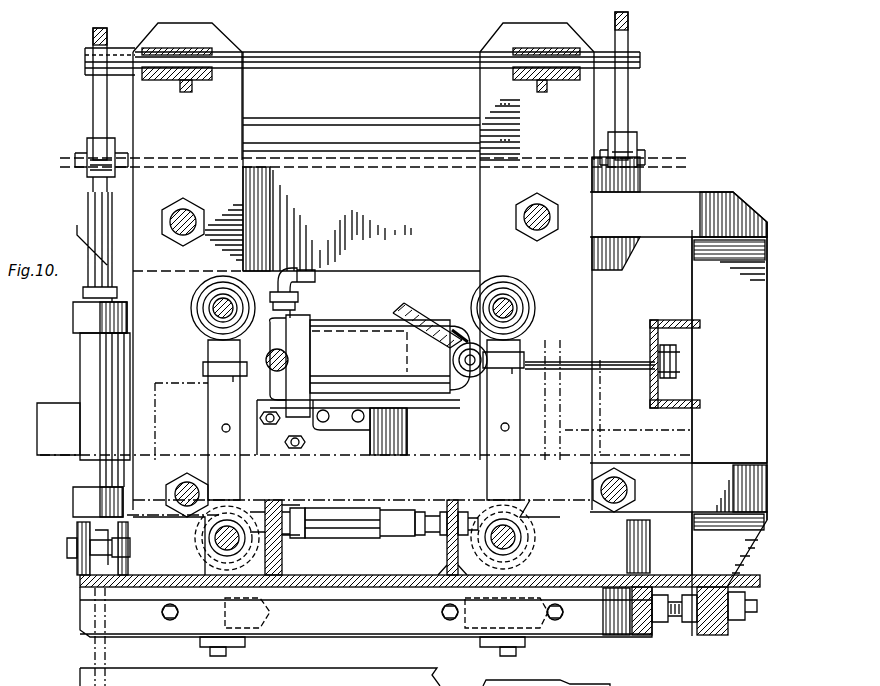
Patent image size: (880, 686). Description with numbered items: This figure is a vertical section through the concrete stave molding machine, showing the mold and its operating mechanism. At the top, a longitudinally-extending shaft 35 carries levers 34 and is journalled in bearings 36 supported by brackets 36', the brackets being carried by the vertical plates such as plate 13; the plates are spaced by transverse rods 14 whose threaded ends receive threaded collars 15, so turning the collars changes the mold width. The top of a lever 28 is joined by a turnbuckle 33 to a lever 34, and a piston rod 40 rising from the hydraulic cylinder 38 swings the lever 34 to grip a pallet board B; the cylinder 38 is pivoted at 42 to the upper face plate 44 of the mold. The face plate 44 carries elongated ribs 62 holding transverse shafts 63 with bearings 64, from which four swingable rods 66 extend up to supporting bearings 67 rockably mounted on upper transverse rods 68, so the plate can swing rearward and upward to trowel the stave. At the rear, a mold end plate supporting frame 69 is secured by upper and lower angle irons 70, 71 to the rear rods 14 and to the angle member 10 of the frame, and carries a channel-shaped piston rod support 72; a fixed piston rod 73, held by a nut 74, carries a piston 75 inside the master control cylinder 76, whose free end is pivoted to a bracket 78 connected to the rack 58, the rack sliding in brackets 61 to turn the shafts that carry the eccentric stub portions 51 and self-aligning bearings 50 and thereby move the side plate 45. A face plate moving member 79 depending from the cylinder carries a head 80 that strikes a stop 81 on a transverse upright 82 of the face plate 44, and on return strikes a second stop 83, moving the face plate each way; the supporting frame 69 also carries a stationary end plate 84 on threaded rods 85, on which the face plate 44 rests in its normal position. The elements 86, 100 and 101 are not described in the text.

The angle member 10 is at (636, 190).
The plate 13 is at (238, 42).
The transverse rod 14 is at (180, 230).
The threaded collar 15 is at (175, 202).
The lever 28 is at (96, 662).
The turnbuckle 33 is at (87, 140).
The lever 34 is at (93, 112).
The longitudinally-extending shaft 35 is at (336, 50).
The bearing 36 is at (361, 40).
The bracket 36' is at (363, 94).
The hydraulic cylinder 38 is at (86, 370).
The piston rod 40 is at (96, 218).
The pivot 42 is at (67, 552).
The upper face plate 44 is at (552, 574).
The side plate 45 is at (83, 630).
The self-aligning bearing 50 is at (200, 642).
The eccentric stub portion 51 is at (226, 652).
The rack 58 is at (40, 414).
The bracket 61 is at (155, 385).
The elongated rib 62 is at (145, 524).
The transversely extending shaft 63 is at (215, 536).
The bearing 64 is at (198, 552).
The swingable and adjustable rod 66 is at (208, 390).
The supporting bearing 67 is at (200, 296).
The upper transverse rod 68 is at (213, 306).
The mold end plate supporting frame 69 is at (698, 298).
The upper angle iron 70 is at (682, 204).
The lower angle iron 71 is at (750, 460).
The channel-shaped piston rod support 72 is at (650, 330).
The fixed piston rod 73 is at (630, 372).
The nut 74 is at (676, 358).
The piston 75 is at (403, 338).
The master control cylinder 76 is at (336, 326).
The bracket 78 is at (290, 452).
The face plate moving member 79 is at (290, 506).
The head 80 is at (380, 508).
The stop 81 is at (425, 512).
The transverse upright 82 is at (447, 545).
The second stop 83 is at (270, 500).
The stationary end plate 84 is at (640, 636).
The threaded rod 85 is at (670, 622).
The plate 86 is at (385, 125).
The hose 100 is at (424, 312).
The pipe 101 is at (308, 284).
The pallet board B is at (758, 198).